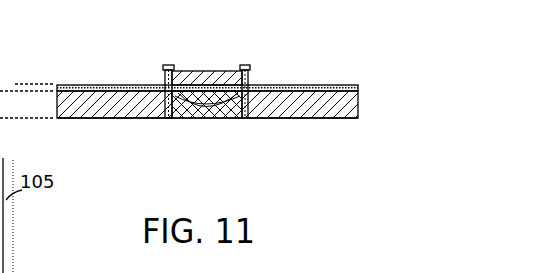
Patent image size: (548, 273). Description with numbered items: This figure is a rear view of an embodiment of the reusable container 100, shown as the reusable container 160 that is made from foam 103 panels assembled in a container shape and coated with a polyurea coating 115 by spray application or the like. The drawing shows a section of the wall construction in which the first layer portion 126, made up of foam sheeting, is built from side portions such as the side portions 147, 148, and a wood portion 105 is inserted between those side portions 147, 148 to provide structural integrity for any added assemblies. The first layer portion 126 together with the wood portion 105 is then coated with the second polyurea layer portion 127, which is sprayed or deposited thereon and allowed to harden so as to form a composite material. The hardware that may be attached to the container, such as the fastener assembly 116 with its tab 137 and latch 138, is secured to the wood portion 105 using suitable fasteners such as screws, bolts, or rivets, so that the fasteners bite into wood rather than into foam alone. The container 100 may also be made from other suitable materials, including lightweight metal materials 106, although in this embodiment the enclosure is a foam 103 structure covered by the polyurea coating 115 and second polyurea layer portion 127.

The reusable container 100 is at (322, 210).
The foam 103 is at (337, 86).
The wood portion 105 is at (233, 104).
The lightweight metal material 106 is at (232, 71).
The polyurea coating 115 is at (124, 85).
The fastener assembly 116 is at (193, 48).
The first layer portion 126 is at (29, 140).
The second polyurea layer portion 127 is at (44, 118).
The tab 137 is at (8, 234).
The latch 138 is at (251, 67).
The side portion 147 is at (144, 119).
The side portion 148 is at (278, 119).
The reusable container 160 is at (113, 22).